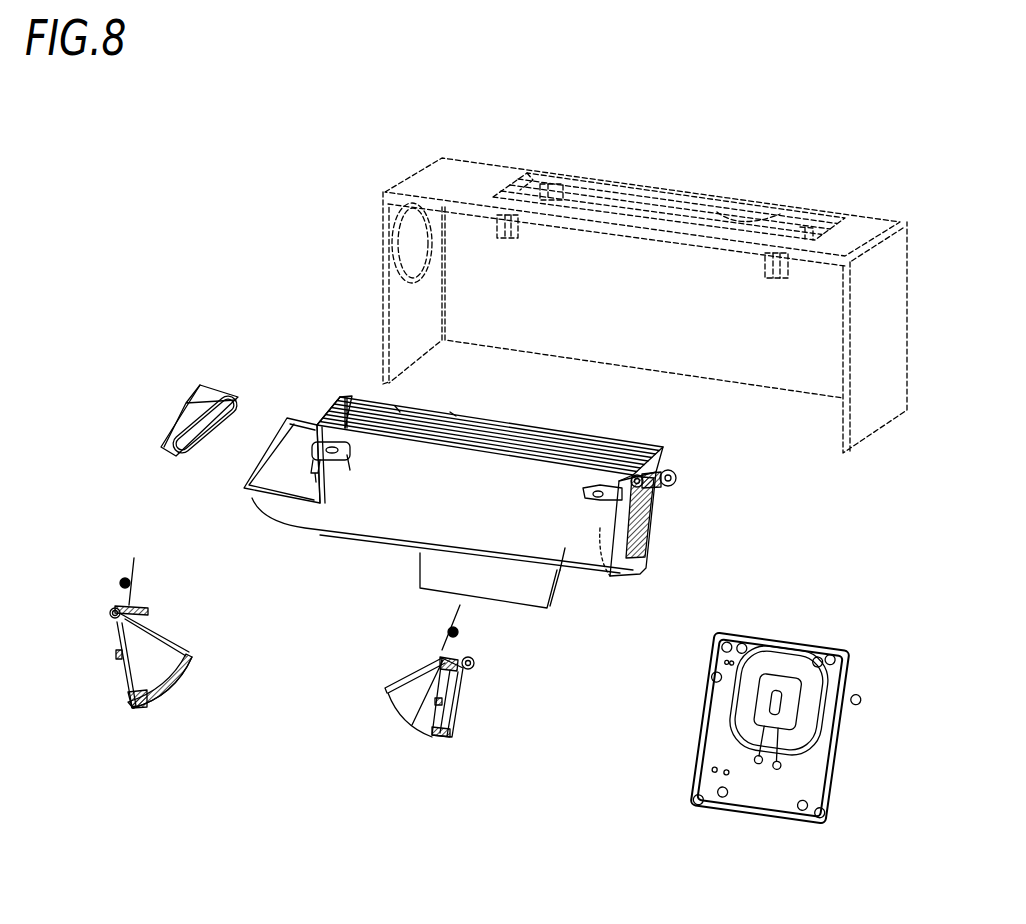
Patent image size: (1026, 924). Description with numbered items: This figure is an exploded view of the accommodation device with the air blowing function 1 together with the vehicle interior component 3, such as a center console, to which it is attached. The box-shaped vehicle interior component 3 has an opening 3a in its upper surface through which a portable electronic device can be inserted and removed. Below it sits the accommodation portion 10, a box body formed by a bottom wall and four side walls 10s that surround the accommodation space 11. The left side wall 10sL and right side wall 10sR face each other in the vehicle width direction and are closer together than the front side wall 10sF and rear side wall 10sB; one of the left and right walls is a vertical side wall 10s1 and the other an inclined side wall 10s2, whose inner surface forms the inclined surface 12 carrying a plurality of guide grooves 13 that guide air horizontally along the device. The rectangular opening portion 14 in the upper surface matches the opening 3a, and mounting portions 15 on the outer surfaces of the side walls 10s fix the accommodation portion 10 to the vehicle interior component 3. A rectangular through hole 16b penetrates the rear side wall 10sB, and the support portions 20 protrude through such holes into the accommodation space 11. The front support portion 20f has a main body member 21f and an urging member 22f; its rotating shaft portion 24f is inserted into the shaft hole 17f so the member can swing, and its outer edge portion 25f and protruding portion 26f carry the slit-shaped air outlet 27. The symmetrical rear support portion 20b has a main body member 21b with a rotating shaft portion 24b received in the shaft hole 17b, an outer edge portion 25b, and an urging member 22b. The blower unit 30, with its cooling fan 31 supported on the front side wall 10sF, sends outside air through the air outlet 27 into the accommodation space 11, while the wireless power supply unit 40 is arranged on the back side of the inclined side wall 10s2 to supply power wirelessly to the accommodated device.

The accommodation device with the air blowing function 1 is at (315, 690).
The vehicle interior component 3 is at (462, 176).
The opening 3a is at (716, 205).
The accommodation portion 10 is at (537, 542).
The side walls 10s is at (500, 526).
The front side wall 10sF is at (312, 410).
The right side wall 10sR is at (507, 433).
The left side wall 10sL is at (585, 600).
The rear side wall 10sB is at (640, 565).
The vertical side wall 10s1 is at (468, 587).
The inclined side wall 10s2 is at (475, 409).
The accommodation space 11 is at (628, 432).
The inclined surface 12 is at (398, 408).
The guide groove 13 is at (452, 412).
The opening portion 14 is at (346, 398).
The mounting portion 15 is at (347, 455).
The through hole 16b is at (645, 532).
The shaft hole 17b is at (673, 470).
The shaft hole 17f is at (306, 424).
The support portion 20 is at (291, 700).
The front support portion 20f is at (117, 668).
The rear support portion 20b is at (408, 735).
The main body member 21f is at (172, 633).
The main body member 21b is at (455, 715).
The urging member 22f is at (140, 566).
The urging member 22b is at (452, 612).
The rotating shaft portion 24f is at (112, 610).
The rotating shaft portion 24b is at (460, 662).
The outer edge portion 25f is at (193, 673).
The outer edge portion 25b is at (388, 700).
The protruding portion 26f is at (138, 712).
The air outlet 27 is at (150, 705).
The blower unit 30 is at (160, 424).
The cooling fan 31 is at (186, 414).
The wireless power supply unit 40 is at (752, 793).